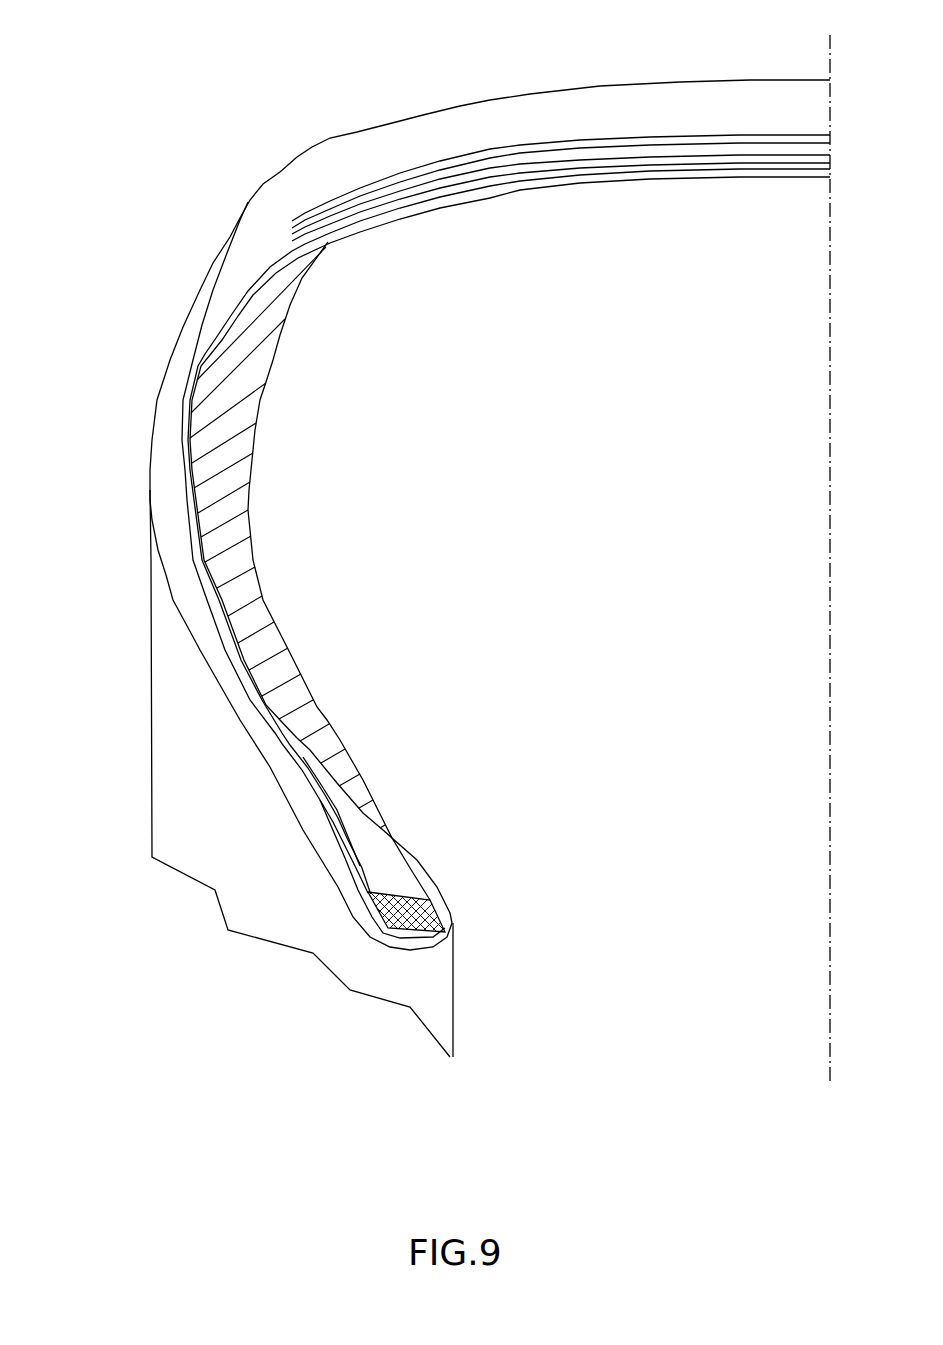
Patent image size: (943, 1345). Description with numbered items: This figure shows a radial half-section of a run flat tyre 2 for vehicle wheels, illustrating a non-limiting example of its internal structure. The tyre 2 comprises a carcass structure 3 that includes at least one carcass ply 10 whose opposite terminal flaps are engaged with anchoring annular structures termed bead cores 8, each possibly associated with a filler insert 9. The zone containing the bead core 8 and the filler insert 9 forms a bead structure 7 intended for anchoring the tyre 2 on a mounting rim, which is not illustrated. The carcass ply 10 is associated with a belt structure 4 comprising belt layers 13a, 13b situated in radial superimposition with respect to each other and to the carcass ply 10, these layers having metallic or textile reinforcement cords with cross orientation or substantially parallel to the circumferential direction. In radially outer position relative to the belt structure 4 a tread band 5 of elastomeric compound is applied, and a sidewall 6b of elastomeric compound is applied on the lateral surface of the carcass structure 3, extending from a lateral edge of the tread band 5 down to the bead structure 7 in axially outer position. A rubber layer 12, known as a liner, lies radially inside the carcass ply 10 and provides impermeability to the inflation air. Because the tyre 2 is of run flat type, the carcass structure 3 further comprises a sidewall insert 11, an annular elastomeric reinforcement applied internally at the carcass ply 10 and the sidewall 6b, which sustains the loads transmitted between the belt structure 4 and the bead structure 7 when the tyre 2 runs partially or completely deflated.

The tyre 2 is at (110, 455).
The carcass structure 3 is at (350, 736).
The belt structure 4 is at (660, 122).
The tread band 5 is at (583, 103).
The sidewall 6b is at (167, 436).
The bead structure 7 is at (430, 854).
The bead core 8 is at (446, 926).
The filler insert 9 is at (369, 876).
The carcass ply 10 is at (185, 503).
The sidewall insert 11 is at (253, 632).
The rubber layer 12 is at (682, 180).
The belt layer 13a is at (380, 183).
The belt layer 13b is at (543, 158).